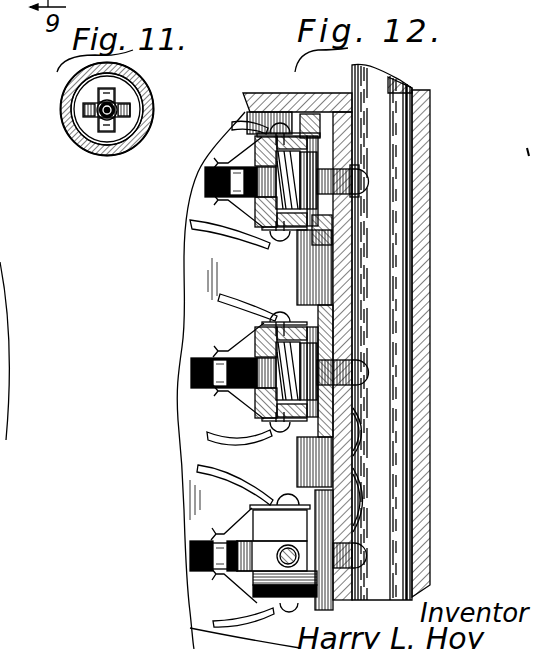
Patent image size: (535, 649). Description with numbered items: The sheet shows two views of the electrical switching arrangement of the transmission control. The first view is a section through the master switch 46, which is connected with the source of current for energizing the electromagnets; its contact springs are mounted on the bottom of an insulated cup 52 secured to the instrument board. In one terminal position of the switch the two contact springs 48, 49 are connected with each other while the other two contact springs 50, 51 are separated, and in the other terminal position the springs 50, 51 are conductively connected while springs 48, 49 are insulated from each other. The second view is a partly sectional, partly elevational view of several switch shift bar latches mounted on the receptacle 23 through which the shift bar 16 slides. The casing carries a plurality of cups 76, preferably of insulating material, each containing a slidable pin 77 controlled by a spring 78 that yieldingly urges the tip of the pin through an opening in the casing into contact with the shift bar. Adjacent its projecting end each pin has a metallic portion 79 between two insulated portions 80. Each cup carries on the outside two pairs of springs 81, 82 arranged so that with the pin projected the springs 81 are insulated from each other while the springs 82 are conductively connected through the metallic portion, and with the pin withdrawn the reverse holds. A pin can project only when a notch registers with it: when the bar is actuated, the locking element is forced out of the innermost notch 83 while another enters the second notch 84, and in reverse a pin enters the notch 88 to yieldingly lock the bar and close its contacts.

In FIG. 12, the shift bar 16 is at (400, 357).
In FIG. 12, the receptacle 23 is at (412, 312).
In FIG. 11, the master switch 46 is at (116, 104).
In FIG. 11, the contact spring 48 is at (109, 131).
In FIG. 11, the contact spring 49 is at (70, 92).
In FIG. 11, the contact spring 50 is at (125, 111).
In FIG. 11, the contact spring 51 is at (88, 113).
In FIG. 11, the insulated cup 52 is at (97, 128).
In FIG. 12, the cup 76 is at (312, 105).
In FIG. 12, the slidable pin 77 is at (365, 183).
In FIG. 12, the spring 78 is at (293, 242).
In FIG. 12, the metallic portion 79 is at (222, 210).
In FIG. 12, the insulated portion 80 is at (224, 168).
In FIG. 12, the springs 81 is at (240, 135).
In FIG. 12, the springs 82 is at (252, 556).
In FIG. 12, the innermost notch 83 is at (362, 198).
In FIG. 12, the second notch 84 is at (358, 432).
In FIG. 12, the notch 88 is at (365, 500).